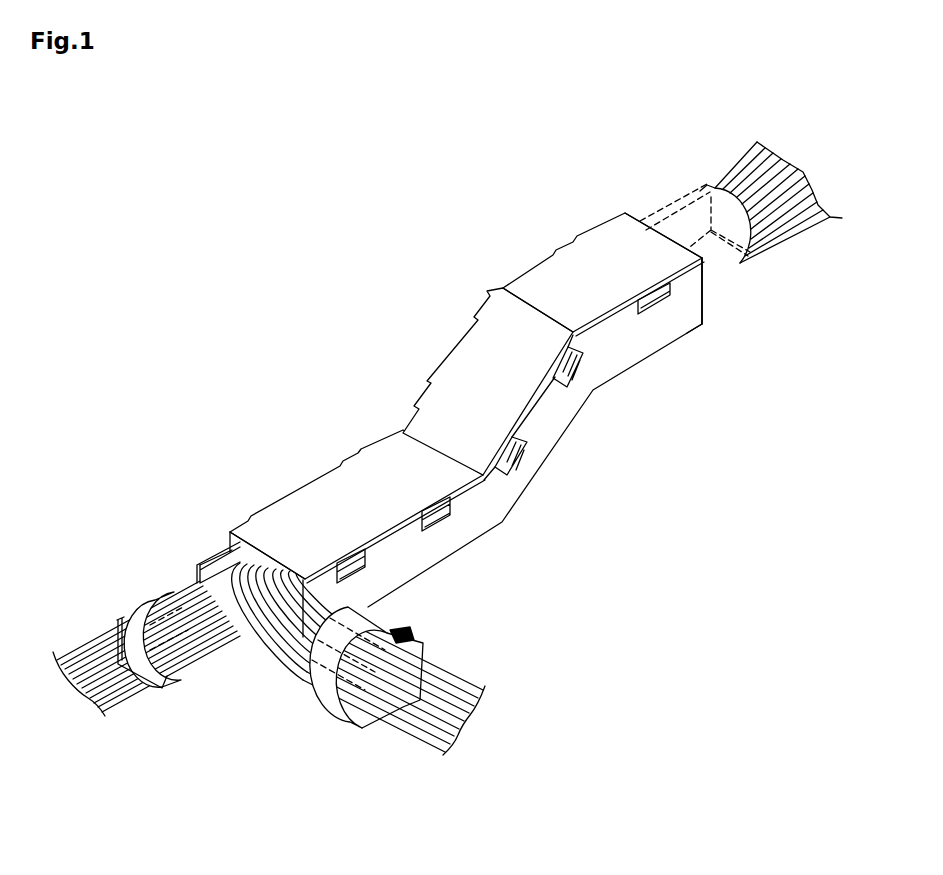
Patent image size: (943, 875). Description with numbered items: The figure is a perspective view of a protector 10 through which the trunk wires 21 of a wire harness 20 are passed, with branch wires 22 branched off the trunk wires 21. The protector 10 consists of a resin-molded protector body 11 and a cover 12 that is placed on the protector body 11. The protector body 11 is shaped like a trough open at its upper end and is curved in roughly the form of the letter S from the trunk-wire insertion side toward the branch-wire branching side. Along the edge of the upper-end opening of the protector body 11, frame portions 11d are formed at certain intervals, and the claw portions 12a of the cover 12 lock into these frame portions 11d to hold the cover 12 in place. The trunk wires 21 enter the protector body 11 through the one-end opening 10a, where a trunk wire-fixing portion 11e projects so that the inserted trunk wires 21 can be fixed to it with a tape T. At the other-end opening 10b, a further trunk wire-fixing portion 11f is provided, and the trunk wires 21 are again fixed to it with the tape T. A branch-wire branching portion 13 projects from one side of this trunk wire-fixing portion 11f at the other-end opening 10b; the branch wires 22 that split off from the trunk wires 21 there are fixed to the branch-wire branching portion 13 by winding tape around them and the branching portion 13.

The protector 10 is at (226, 303).
The one-end opening 10a is at (626, 212).
The other-end opening 10b is at (227, 543).
The protector body 11 is at (515, 483).
The frame portions 11d is at (697, 316).
The trunk wire-fixing portion 11e is at (745, 262).
The trunk wire-fixing portion 11f is at (143, 608).
The cover 12 is at (443, 366).
The claw portions 12a is at (640, 320).
The branch-wire branching portion 13 is at (423, 643).
The wire harness 20 is at (232, 770).
The trunk wires 21 is at (820, 218).
The branch wires 22 is at (395, 712).
The tape T is at (720, 283).